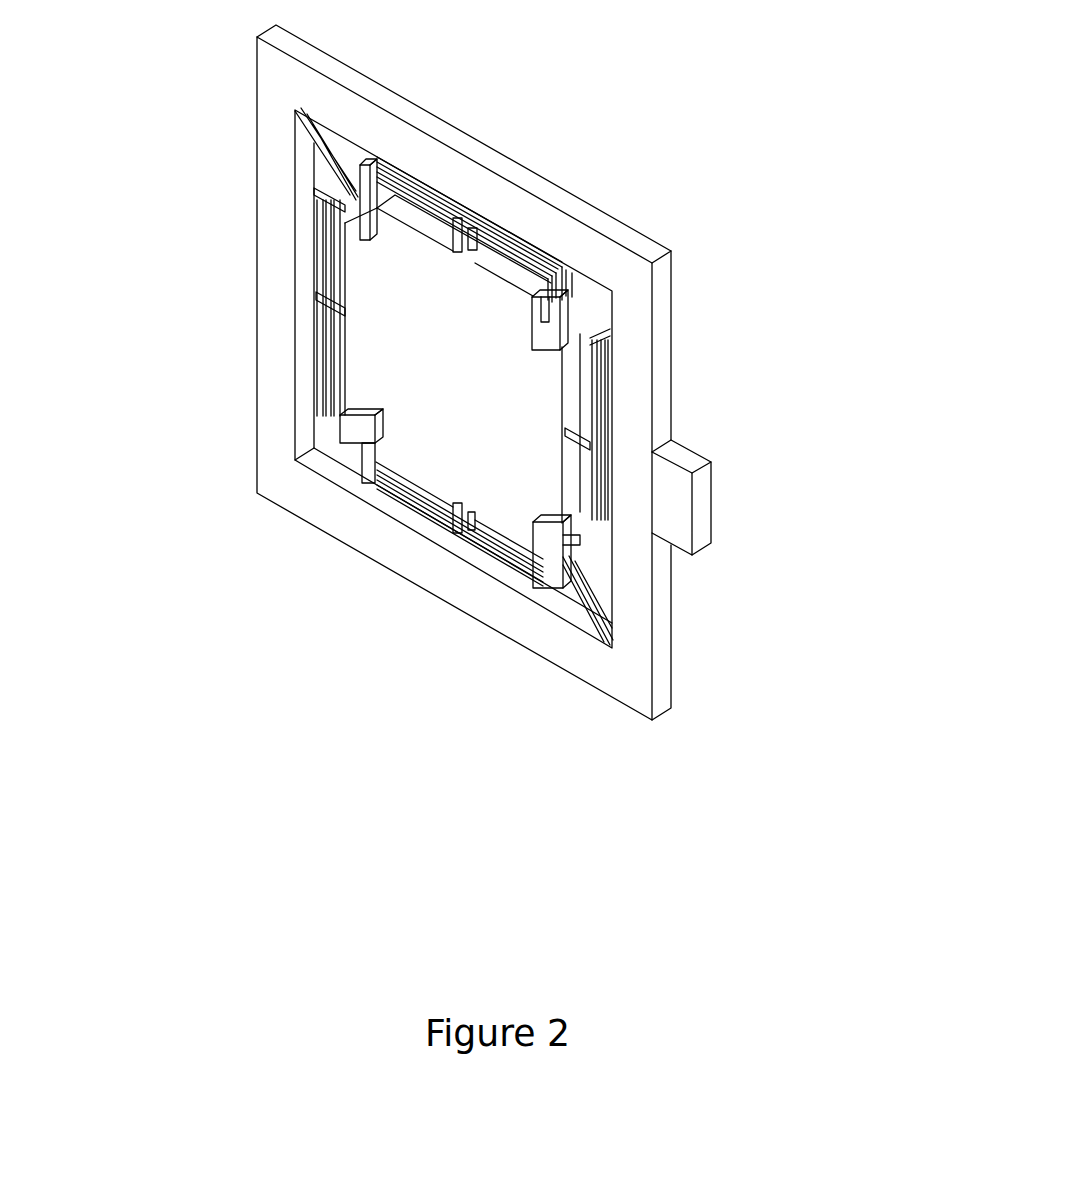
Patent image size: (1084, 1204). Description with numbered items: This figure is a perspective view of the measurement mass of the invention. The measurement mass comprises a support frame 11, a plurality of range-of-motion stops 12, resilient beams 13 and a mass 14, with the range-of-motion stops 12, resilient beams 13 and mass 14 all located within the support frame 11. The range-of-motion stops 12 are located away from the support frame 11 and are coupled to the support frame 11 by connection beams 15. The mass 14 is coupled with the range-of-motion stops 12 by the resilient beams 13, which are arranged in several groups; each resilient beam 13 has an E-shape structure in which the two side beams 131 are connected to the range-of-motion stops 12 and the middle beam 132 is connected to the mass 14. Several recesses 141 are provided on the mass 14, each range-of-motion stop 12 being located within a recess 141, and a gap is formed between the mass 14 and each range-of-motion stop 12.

The support frame 11 is at (625, 667).
The range-of-motion stop 12 is at (350, 415).
The resilient beam 13 is at (312, 296).
The side beam 131 is at (594, 334).
The middle beam 132 is at (577, 443).
The mass 14 is at (427, 455).
The recess 141 is at (348, 204).
The connection beam 15 is at (620, 637).